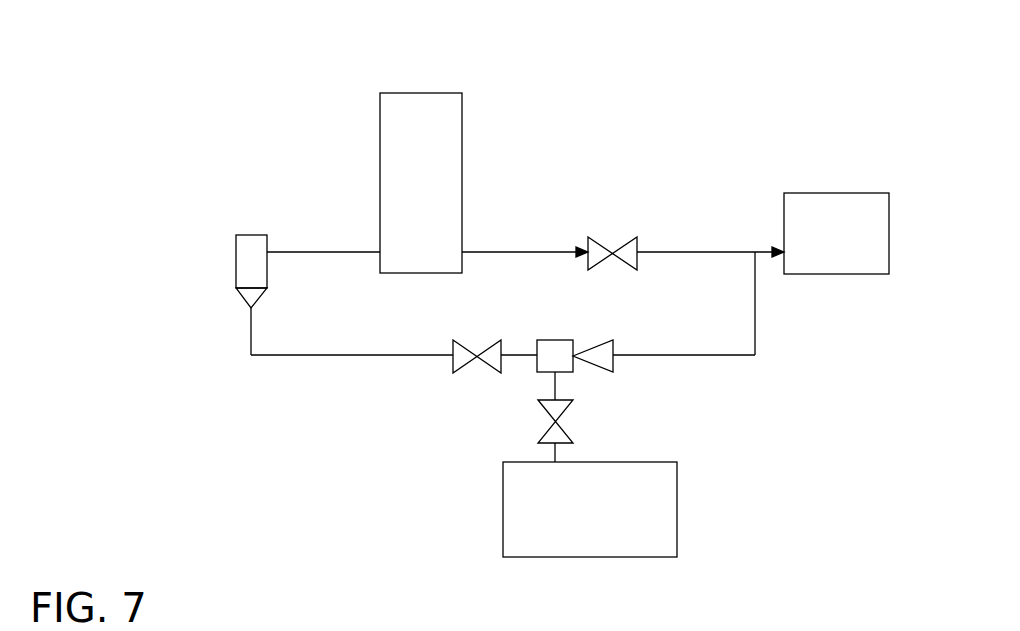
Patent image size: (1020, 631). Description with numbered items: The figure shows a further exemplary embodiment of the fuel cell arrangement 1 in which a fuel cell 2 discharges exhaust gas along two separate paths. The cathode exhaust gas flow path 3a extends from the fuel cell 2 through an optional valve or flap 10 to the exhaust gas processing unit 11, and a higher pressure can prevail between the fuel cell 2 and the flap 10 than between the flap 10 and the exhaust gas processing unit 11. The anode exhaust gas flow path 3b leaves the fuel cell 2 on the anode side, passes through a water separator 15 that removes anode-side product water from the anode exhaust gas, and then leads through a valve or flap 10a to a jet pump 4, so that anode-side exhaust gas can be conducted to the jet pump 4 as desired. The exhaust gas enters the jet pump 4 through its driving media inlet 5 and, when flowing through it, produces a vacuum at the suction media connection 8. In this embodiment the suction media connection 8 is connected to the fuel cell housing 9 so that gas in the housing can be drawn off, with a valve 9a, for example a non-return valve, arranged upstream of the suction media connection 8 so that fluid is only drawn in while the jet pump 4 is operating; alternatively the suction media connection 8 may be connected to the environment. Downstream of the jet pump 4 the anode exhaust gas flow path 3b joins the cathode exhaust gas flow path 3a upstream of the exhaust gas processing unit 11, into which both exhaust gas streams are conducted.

The fuel cell arrangement 1 is at (697, 71).
The fuel cell 2 is at (462, 150).
The cathode exhaust gas flow path 3a is at (728, 175).
The anode exhaust gas flow path 3b is at (205, 354).
The jet pump 4 is at (545, 371).
The driving media inlet 5 is at (524, 340).
The suction media connection 8 is at (530, 394).
The fuel cell housing 9 is at (677, 520).
The valve 9a is at (565, 410).
The flap 10 is at (600, 243).
The flap 10a is at (453, 362).
The exhaust gas processing unit 11 is at (819, 274).
The water separator 15 is at (238, 262).